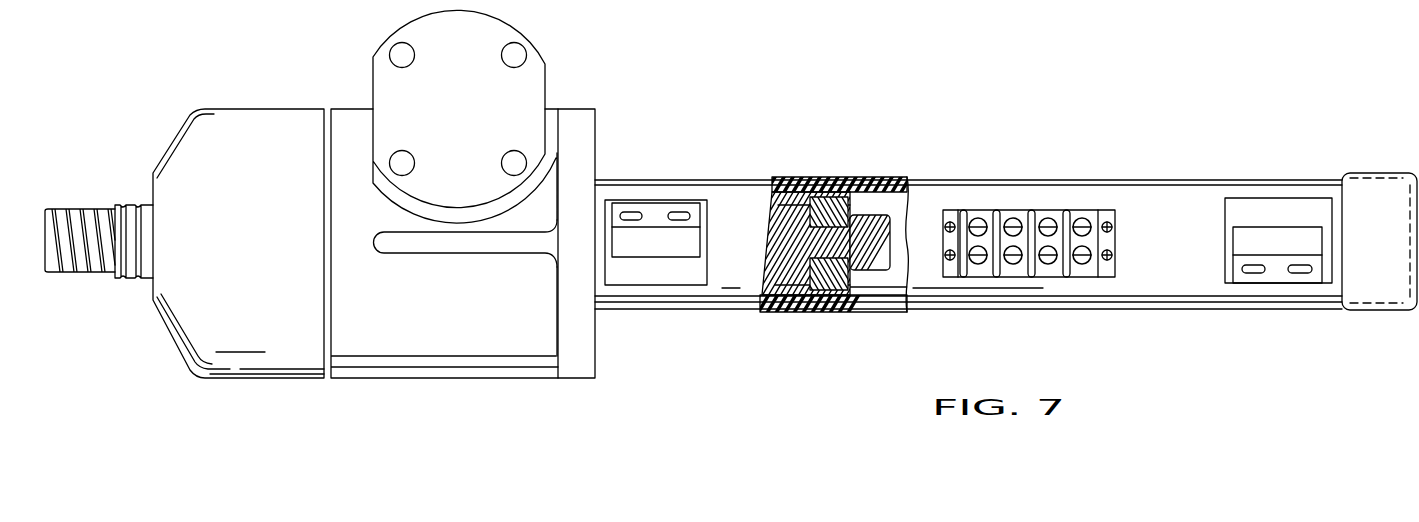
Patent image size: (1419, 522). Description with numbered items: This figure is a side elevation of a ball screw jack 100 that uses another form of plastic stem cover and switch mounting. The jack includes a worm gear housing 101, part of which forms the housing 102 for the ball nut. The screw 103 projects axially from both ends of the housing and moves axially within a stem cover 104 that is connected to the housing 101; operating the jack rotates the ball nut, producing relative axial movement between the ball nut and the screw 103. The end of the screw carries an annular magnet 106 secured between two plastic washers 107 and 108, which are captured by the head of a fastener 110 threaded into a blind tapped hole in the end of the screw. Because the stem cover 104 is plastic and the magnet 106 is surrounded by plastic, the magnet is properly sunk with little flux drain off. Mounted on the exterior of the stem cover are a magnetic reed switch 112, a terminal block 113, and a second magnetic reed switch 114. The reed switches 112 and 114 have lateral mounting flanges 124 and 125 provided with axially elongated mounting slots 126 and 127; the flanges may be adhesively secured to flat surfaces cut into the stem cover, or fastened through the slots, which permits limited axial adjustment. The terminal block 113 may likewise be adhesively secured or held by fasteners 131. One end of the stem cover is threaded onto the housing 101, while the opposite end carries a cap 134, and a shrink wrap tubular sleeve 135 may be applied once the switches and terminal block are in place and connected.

The ball screw jack 100 is at (731, 225).
The worm gear housing 101 is at (597, 128).
The housing for the ball nut 102 is at (267, 362).
The screw 103 is at (767, 213).
The stem cover 104 is at (1172, 180).
The annular magnet 106 is at (828, 307).
The plastic washer 107 is at (823, 307).
The plastic washer 108 is at (813, 243).
The fastener 110 is at (908, 200).
The magnetic reed switch 112 is at (663, 247).
The terminal block 113 is at (1060, 278).
The magnetic reed switch 114 is at (1272, 249).
The lateral mounting flange 124 is at (655, 215).
The lateral mounting flange 125 is at (1278, 272).
The axially elongated mounting slot 126 is at (1253, 275).
The axially elongated mounting slot 127 is at (1297, 277).
The fasteners 131 is at (1113, 232).
The cap 134 is at (1393, 277).
The shrink wrap tubular sleeve 135 is at (893, 178).